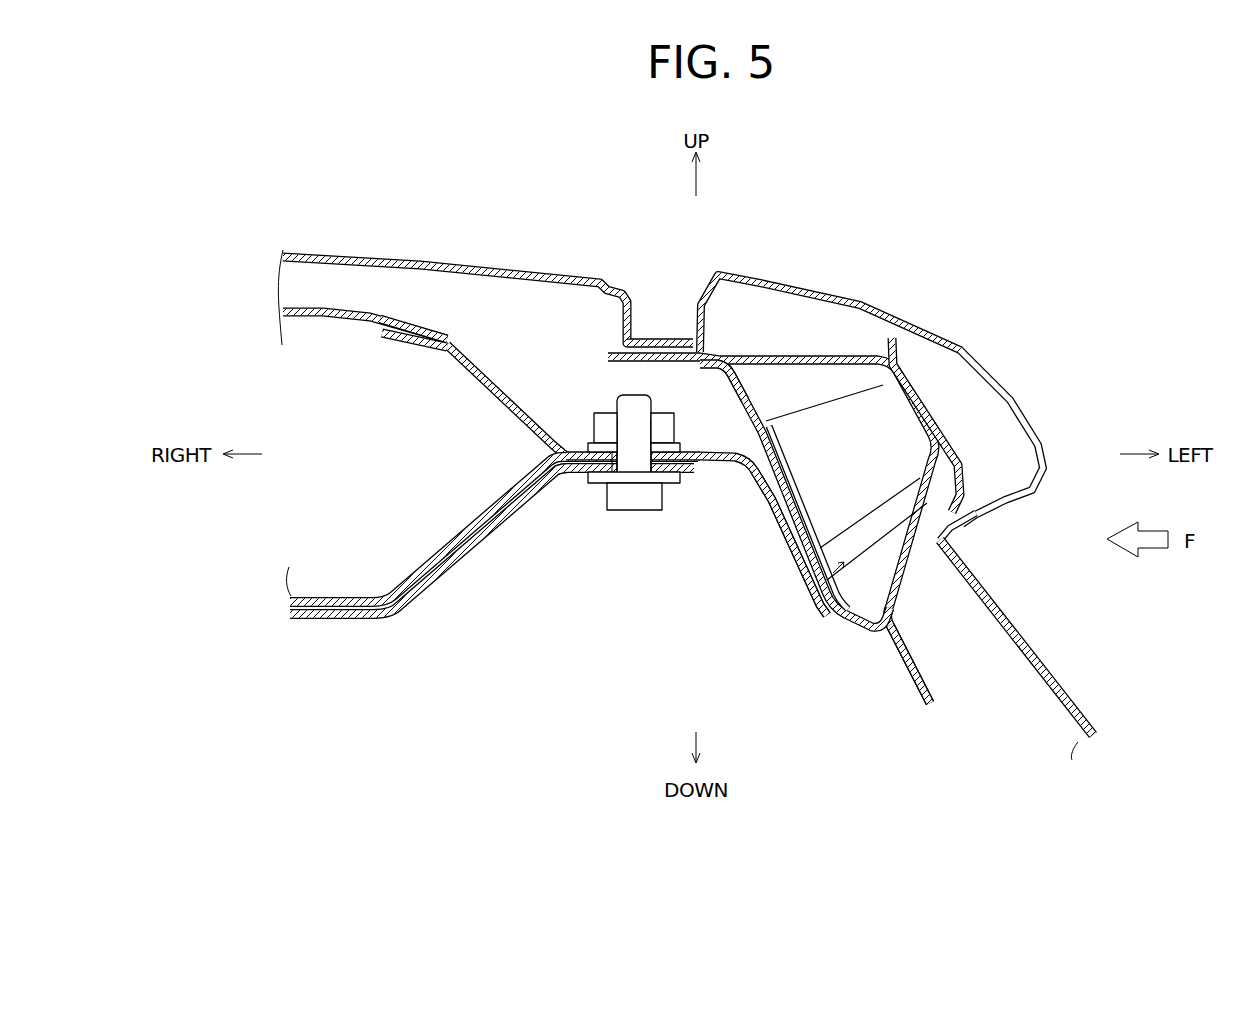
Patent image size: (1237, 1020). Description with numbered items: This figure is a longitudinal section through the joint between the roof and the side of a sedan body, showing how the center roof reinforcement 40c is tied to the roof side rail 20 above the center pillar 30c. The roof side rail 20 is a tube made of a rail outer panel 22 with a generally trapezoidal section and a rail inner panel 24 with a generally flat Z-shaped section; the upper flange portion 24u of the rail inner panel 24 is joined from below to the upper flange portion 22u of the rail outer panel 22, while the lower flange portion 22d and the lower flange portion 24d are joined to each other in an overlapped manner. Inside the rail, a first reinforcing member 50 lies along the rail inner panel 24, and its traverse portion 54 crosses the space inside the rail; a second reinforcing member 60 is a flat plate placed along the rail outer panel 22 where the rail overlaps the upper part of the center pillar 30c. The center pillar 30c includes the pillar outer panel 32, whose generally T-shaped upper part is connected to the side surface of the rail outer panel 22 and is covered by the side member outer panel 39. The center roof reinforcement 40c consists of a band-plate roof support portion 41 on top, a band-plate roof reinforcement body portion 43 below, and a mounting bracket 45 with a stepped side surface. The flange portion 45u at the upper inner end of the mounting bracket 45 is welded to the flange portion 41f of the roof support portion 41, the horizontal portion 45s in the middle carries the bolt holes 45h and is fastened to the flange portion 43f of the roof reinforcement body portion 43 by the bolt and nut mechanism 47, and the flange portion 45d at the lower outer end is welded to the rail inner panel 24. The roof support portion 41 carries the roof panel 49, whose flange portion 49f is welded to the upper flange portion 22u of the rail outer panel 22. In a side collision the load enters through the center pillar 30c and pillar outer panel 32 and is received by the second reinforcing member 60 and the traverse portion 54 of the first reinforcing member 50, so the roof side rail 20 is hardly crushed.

The roof side rail 20 is at (805, 337).
The rail outer panel 22 is at (838, 356).
The upper flange portion of the rail outer panel 22u is at (637, 363).
The lower flange portion of the rail outer panel 22d is at (915, 686).
The rail inner panel 24 is at (824, 610).
The upper flange portion of the rail inner panel 24u is at (720, 373).
The lower flange portion of the rail inner panel 24d is at (915, 686).
The center pillar 30c is at (1036, 626).
The pillar outer panel 32 is at (957, 450).
The side member outer panel 39 is at (956, 342).
The center roof reinforcement 40c is at (354, 291).
The roof support portion 41 is at (325, 307).
The flange portion of the roof support portion 41f is at (433, 323).
The roof reinforcement body portion 43 is at (452, 538).
The flange portion of the roof reinforcement body portion 43f is at (548, 460).
The mounting bracket 45 is at (737, 484).
The flange portion (upper) of the mounting bracket 45u is at (395, 341).
The horizontal portion of the mounting bracket 45s is at (699, 472).
The bolt hole 45h is at (611, 462).
The flange portion (lower) of the mounting bracket 45d is at (802, 576).
The bolt & nut mechanism 47 is at (639, 497).
The roof panel 49 is at (515, 264).
The flange portion of the roof panel 49f is at (660, 338).
The first reinforcing member 50 is at (817, 594).
The traverse portion 54 is at (864, 582).
The second reinforcing member 60 is at (970, 520).